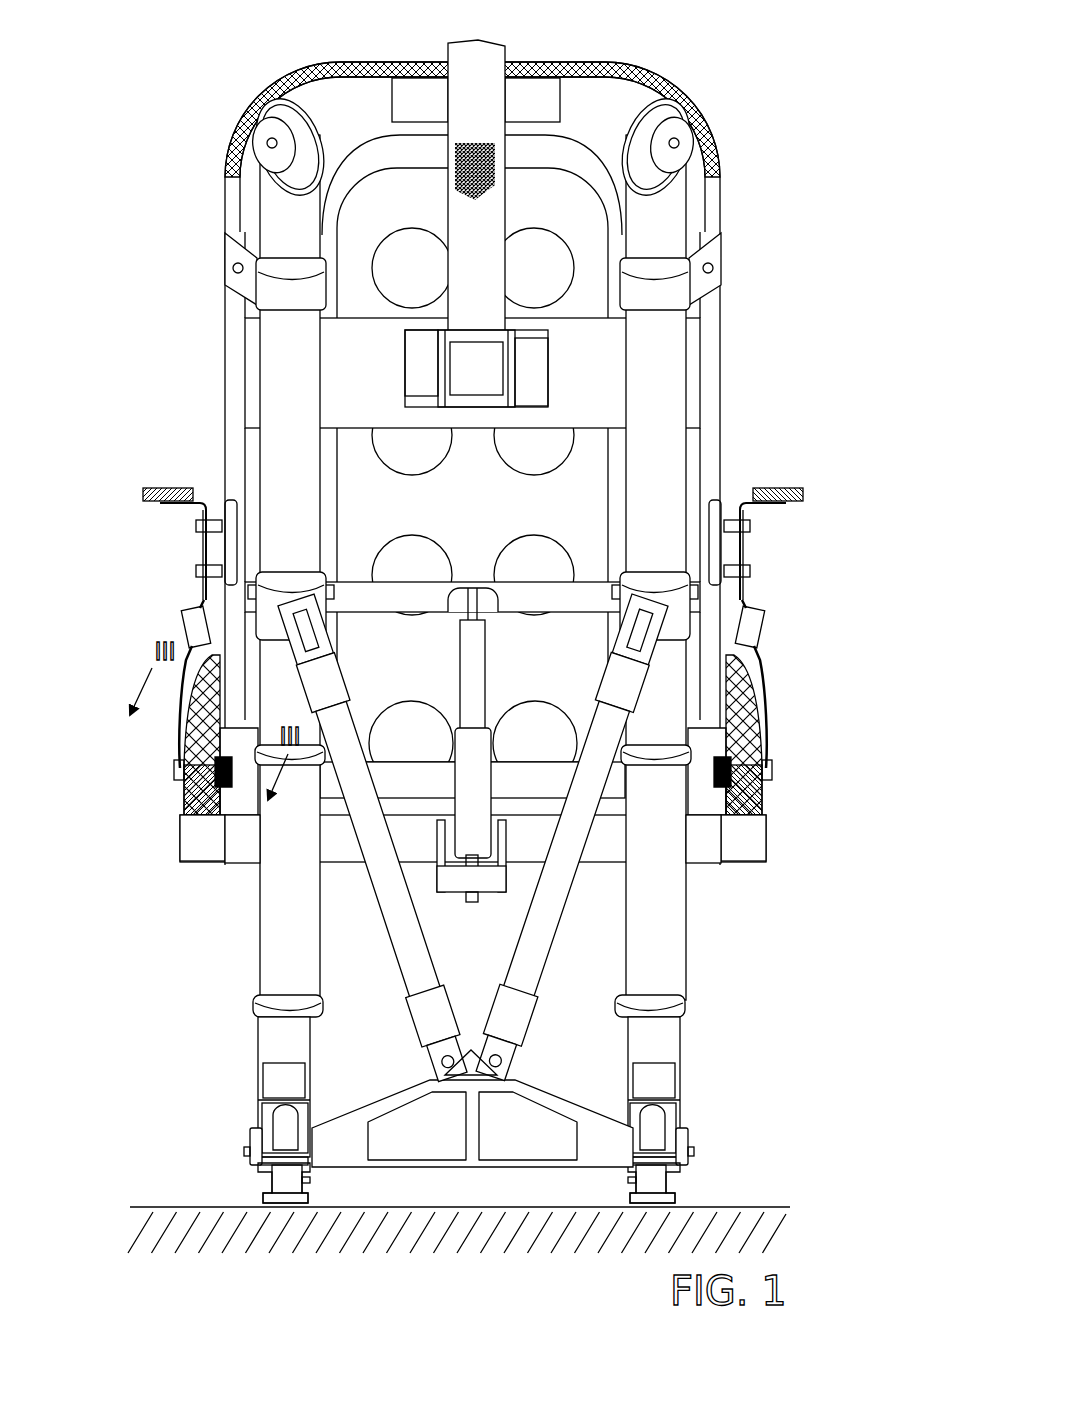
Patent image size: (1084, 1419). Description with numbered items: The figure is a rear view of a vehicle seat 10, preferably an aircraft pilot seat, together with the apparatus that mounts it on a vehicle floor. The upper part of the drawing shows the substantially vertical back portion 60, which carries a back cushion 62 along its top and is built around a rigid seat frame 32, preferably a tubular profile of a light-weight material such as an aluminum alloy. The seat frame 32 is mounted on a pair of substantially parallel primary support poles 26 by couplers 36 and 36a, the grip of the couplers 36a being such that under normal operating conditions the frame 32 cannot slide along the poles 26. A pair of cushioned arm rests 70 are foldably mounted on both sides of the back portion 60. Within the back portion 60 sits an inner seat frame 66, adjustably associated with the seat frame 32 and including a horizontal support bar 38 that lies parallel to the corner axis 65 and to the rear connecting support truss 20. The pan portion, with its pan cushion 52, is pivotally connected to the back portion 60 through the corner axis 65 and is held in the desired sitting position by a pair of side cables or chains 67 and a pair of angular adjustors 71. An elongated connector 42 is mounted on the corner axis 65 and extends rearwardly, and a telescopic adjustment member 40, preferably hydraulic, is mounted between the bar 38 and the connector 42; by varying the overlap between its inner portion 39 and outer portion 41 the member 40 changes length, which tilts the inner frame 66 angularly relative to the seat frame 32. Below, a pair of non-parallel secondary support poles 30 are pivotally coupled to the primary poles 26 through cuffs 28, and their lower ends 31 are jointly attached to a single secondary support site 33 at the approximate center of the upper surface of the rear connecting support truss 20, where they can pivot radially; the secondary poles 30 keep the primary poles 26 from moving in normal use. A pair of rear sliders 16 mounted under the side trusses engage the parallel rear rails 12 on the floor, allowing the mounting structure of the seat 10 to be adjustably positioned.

The vehicle seat 10 is at (165, 930).
The rear rails 12 is at (265, 1185).
The rear sliders 16 is at (250, 1160).
The rear connecting support truss 20 is at (350, 1128).
The primary support poles 26 is at (282, 478).
The cuffs 28 is at (265, 605).
The secondary support poles 30 is at (384, 872).
The lower ends of the secondary poles 31 is at (420, 1013).
The seat frame 32 is at (243, 188).
The secondary support site 33 is at (467, 1052).
The couplers 36 is at (243, 257).
The couplers 36a is at (285, 803).
The horizontal support bar 38 is at (597, 597).
The inner portion 39 is at (468, 668).
The telescopic adjustment member 40 is at (437, 722).
The outer portion 41 is at (458, 735).
The elongated connector 42 is at (460, 895).
The pan cushion 52 is at (765, 727).
The back portion 60 is at (797, 420).
The back cushion 62 is at (640, 78).
The corner axis 65 is at (178, 838).
The inner seat frame 66 is at (373, 165).
The side cables or chains 67 is at (218, 597).
The cushioned arm rests 70 is at (160, 488).
The angular adjustors 71 is at (200, 620).